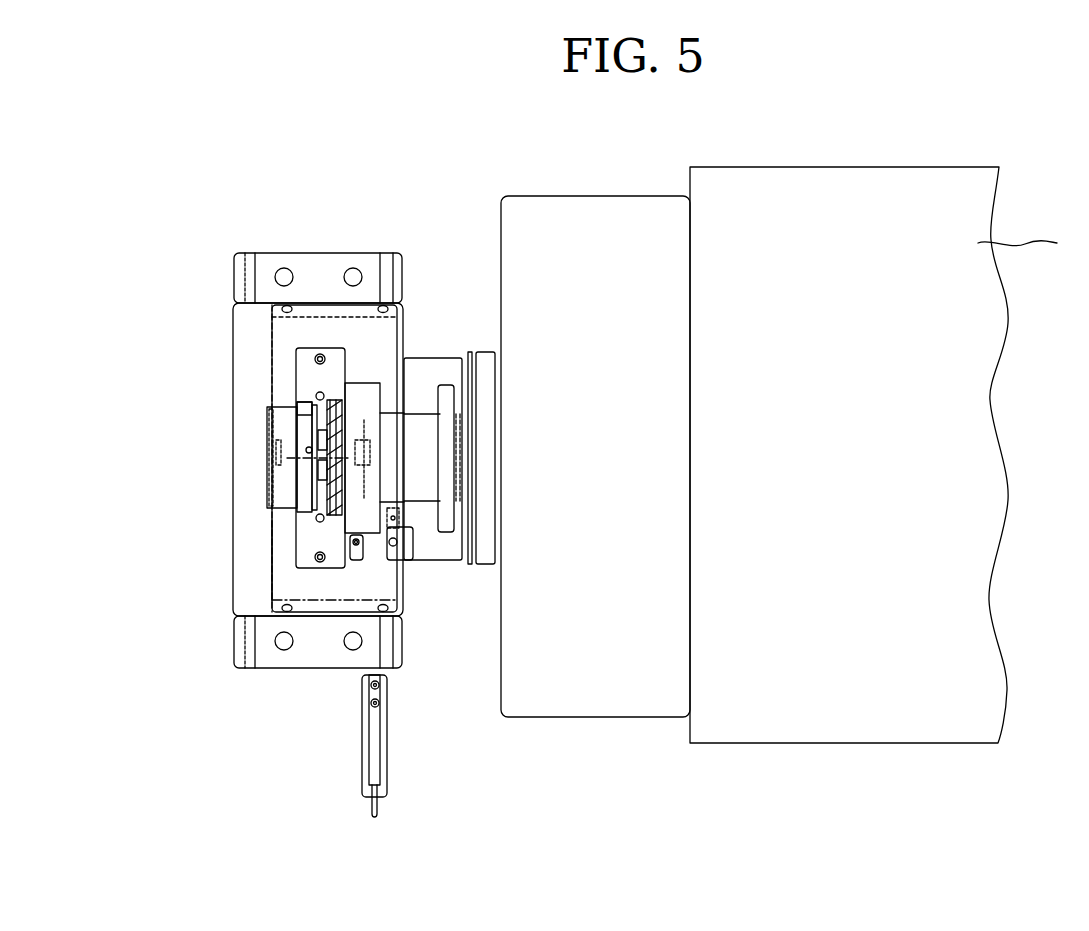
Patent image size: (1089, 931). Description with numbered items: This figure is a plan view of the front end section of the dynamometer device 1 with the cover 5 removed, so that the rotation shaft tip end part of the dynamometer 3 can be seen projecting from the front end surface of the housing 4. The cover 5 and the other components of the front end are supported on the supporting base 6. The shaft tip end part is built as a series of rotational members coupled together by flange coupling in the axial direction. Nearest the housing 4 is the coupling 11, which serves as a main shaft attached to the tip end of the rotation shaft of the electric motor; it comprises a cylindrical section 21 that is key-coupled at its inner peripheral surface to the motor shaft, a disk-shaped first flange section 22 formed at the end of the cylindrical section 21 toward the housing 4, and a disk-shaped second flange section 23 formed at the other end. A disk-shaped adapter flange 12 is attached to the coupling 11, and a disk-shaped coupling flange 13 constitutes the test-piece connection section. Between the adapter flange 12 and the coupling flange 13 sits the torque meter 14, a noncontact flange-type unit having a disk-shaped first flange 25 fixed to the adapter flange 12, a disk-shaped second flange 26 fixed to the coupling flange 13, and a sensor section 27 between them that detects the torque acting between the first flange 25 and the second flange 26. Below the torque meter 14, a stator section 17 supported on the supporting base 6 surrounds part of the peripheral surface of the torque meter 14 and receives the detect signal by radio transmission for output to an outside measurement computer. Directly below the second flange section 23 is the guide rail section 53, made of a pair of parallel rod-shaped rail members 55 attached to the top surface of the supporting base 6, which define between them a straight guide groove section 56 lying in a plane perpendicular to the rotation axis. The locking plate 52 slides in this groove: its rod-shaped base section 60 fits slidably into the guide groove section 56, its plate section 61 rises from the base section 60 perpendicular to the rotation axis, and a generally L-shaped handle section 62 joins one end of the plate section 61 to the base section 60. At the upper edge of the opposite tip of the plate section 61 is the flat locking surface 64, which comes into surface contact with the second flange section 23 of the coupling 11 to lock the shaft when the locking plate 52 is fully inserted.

The dynamometer device 1 is at (572, 178).
The dynamometer 3 is at (727, 142).
The housing 4 is at (1026, 243).
The cover 5 is at (272, 583).
The supporting base 6 is at (247, 647).
The coupling 11 is at (492, 232).
The adapter flange 12 is at (355, 390).
The coupling flange 13 is at (280, 413).
The torque meter 14 is at (238, 212).
The stator section 17 is at (305, 548).
The cylindrical section 21 is at (448, 385).
The first flange section 22 is at (484, 352).
The second flange section 23 is at (420, 427).
The first flange 25 is at (337, 400).
The second flange 26 is at (317, 395).
The sensor section 27 is at (318, 356).
The locking plate 52 is at (386, 759).
The guide rail section 53 is at (377, 553).
The rail members 55 is at (398, 560).
The guide groove section 56 is at (415, 614).
The base section 60 is at (362, 730).
The plate section 61 is at (375, 757).
The handle section 62 is at (372, 805).
The locking surface 64 is at (376, 690).